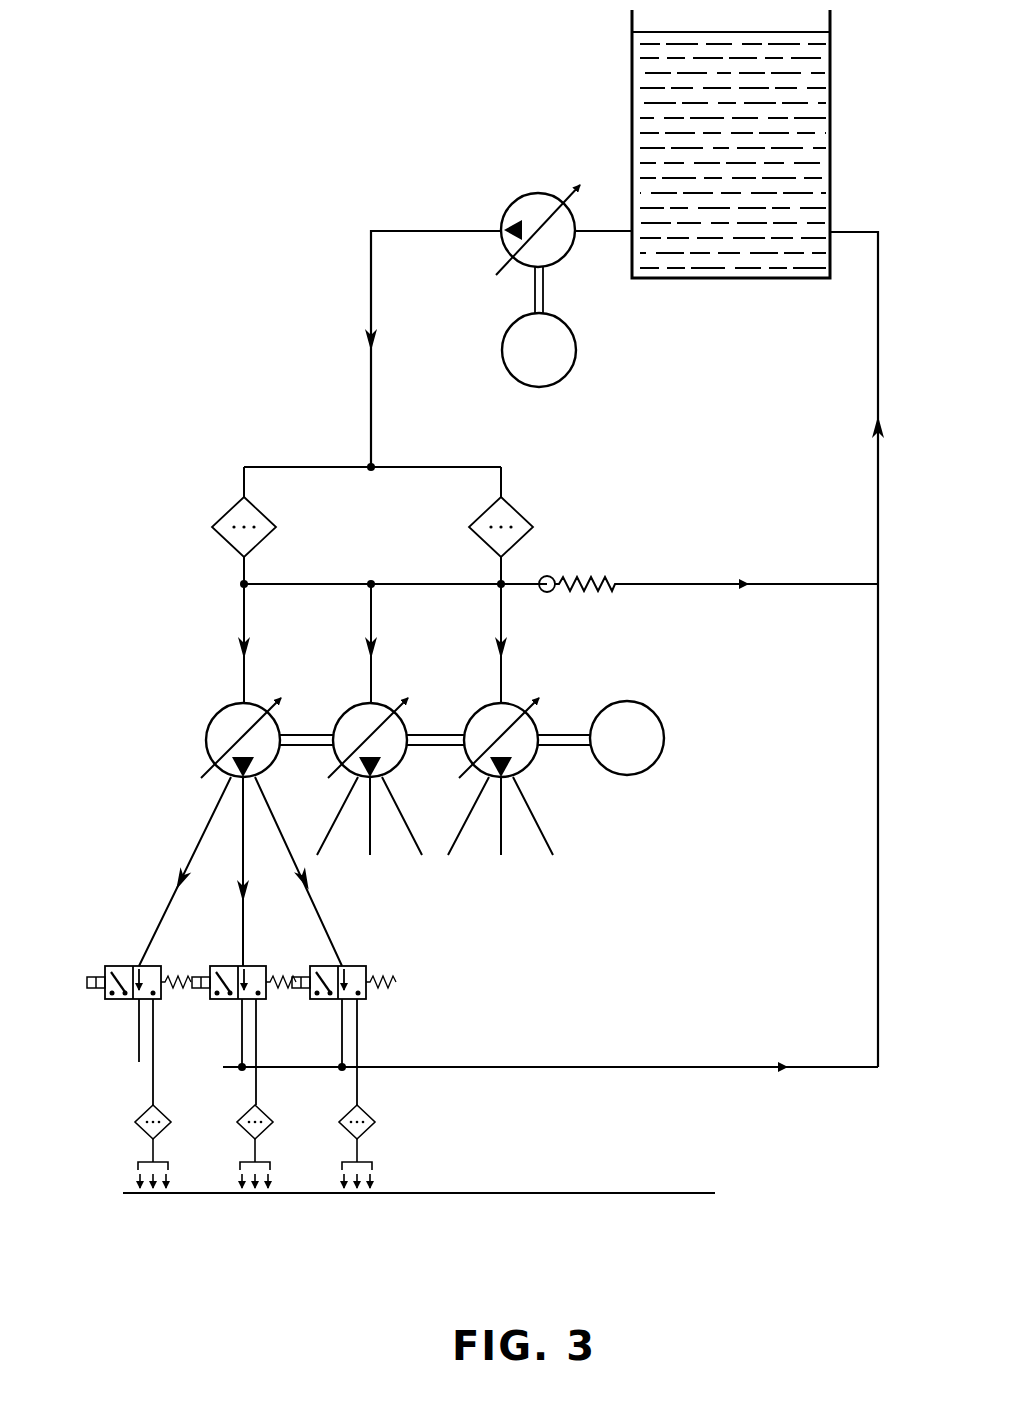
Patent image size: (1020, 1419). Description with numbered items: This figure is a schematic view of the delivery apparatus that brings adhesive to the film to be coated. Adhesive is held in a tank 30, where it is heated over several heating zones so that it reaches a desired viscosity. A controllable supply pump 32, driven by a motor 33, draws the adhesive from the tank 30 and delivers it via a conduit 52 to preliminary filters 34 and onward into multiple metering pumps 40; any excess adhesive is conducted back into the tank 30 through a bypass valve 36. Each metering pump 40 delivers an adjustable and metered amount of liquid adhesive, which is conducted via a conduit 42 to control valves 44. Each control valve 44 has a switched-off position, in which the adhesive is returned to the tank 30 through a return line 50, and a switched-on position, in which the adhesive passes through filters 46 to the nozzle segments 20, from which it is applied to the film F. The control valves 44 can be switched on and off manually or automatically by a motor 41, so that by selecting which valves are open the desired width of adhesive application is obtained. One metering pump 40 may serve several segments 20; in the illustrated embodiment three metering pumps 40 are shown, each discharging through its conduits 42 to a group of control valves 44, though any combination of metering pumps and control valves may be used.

The nozzle segments 20 is at (137, 1162).
The tank 30 is at (831, 140).
The controllable supply pump 32 is at (529, 194).
The motor 33 is at (577, 350).
The preliminary filters 34 is at (219, 522).
The bypass valve 36 is at (549, 576).
The metering pumps 40 is at (220, 710).
The motor 41 is at (653, 708).
The conduit 42 is at (210, 815).
The control valves 44 is at (128, 966).
The filters 46 is at (136, 1122).
The return line 50 is at (536, 1067).
The conduit 52 is at (372, 402).
The film F is at (215, 1195).